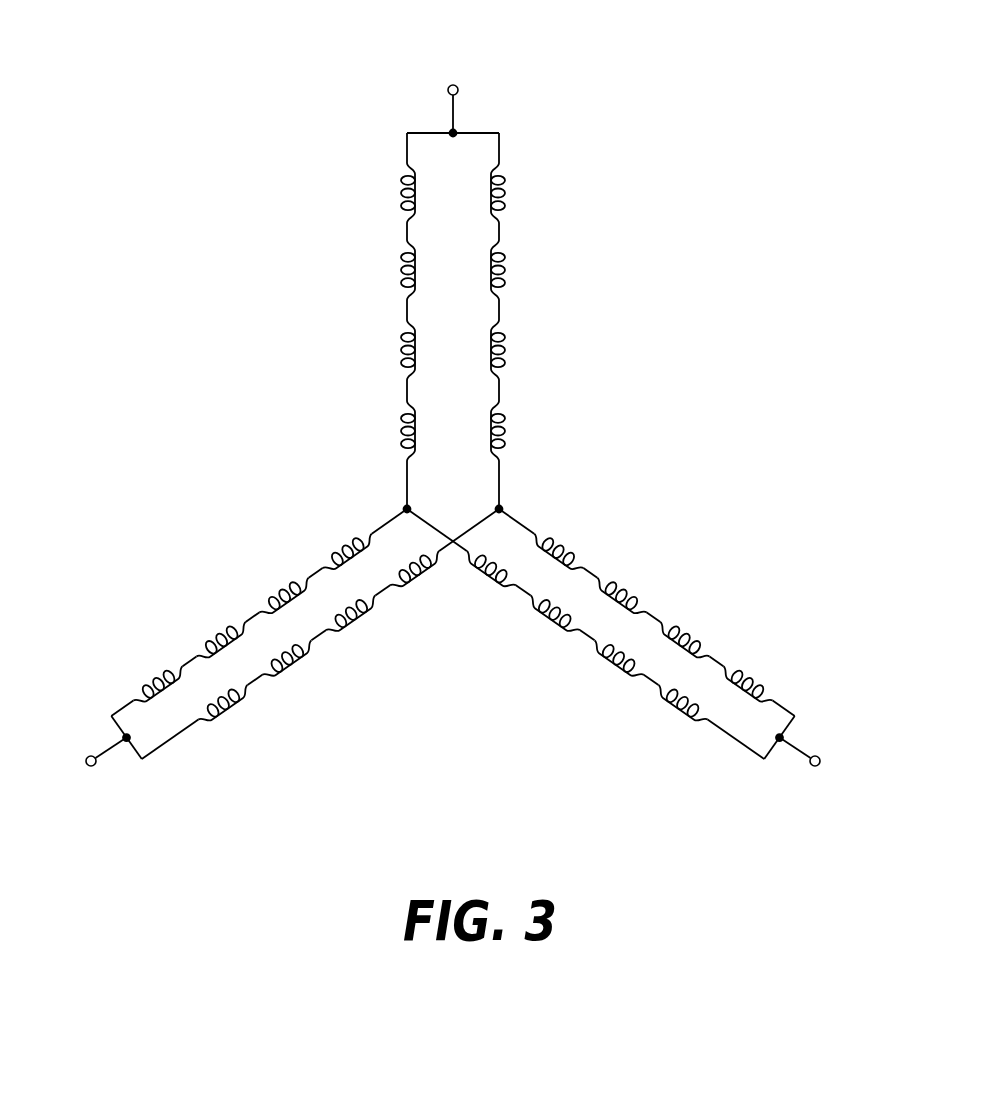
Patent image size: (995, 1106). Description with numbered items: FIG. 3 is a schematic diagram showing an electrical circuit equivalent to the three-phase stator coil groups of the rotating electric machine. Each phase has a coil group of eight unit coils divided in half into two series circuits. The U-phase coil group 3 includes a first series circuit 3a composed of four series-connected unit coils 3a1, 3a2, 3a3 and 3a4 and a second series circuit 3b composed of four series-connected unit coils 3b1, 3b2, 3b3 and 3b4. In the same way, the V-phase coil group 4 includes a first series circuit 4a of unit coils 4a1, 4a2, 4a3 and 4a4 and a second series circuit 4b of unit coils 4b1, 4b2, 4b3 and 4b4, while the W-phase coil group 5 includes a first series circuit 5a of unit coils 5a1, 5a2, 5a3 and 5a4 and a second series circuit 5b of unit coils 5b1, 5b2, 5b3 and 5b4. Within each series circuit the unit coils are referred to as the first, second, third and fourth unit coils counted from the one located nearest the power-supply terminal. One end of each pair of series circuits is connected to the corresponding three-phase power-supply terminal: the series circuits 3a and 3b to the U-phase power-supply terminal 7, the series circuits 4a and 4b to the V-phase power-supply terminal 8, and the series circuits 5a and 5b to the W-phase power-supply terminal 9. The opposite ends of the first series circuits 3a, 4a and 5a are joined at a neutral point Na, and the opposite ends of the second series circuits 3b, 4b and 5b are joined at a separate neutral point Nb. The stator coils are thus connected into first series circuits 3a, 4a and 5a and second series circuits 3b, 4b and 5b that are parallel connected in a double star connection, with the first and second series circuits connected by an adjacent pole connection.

The U-phase coil group 3 is at (482, 132).
The first series circuit 3a is at (406, 307).
The second series circuit 3b is at (500, 307).
The unit coil 3a1 is at (399, 184).
The unit coil 3a2 is at (398, 261).
The unit coil 3a3 is at (398, 342).
The unit coil 3a4 is at (398, 425).
The unit coil 3b1 is at (507, 184).
The unit coil 3b2 is at (508, 261).
The unit coil 3b3 is at (508, 342).
The unit coil 3b4 is at (508, 425).
The V-phase coil group 4 is at (125, 746).
The first series circuit 4a is at (385, 522).
The second series circuit 4b is at (248, 617).
The unit coil 4a1 is at (226, 718).
The unit coil 4a2 is at (287, 670).
The unit coil 4a3 is at (350, 624).
The unit coil 4a4 is at (417, 588).
The unit coil 4b1 is at (152, 677).
The unit coil 4b2 is at (213, 631).
The unit coil 4b3 is at (280, 588).
The unit coil 4b4 is at (333, 547).
The W-phase coil group 5 is at (780, 750).
The first series circuit 5a is at (656, 617).
The second series circuit 5b is at (516, 521).
The unit coil 5a1 is at (757, 677).
The unit coil 5a2 is at (700, 632).
The unit coil 5a3 is at (620, 586).
The unit coil 5a4 is at (562, 541).
The unit coil 5b1 is at (683, 718).
The unit coil 5b2 is at (617, 670).
The unit coil 5b3 is at (556, 625).
The unit coil 5b4 is at (489, 588).
The U-phase power-supply terminal 7 is at (453, 84).
The V-phase power-supply terminal 8 is at (86, 767).
The W-phase power-supply terminal 9 is at (820, 767).
The neutral point Na is at (403, 505).
The neutral point Nb is at (505, 503).